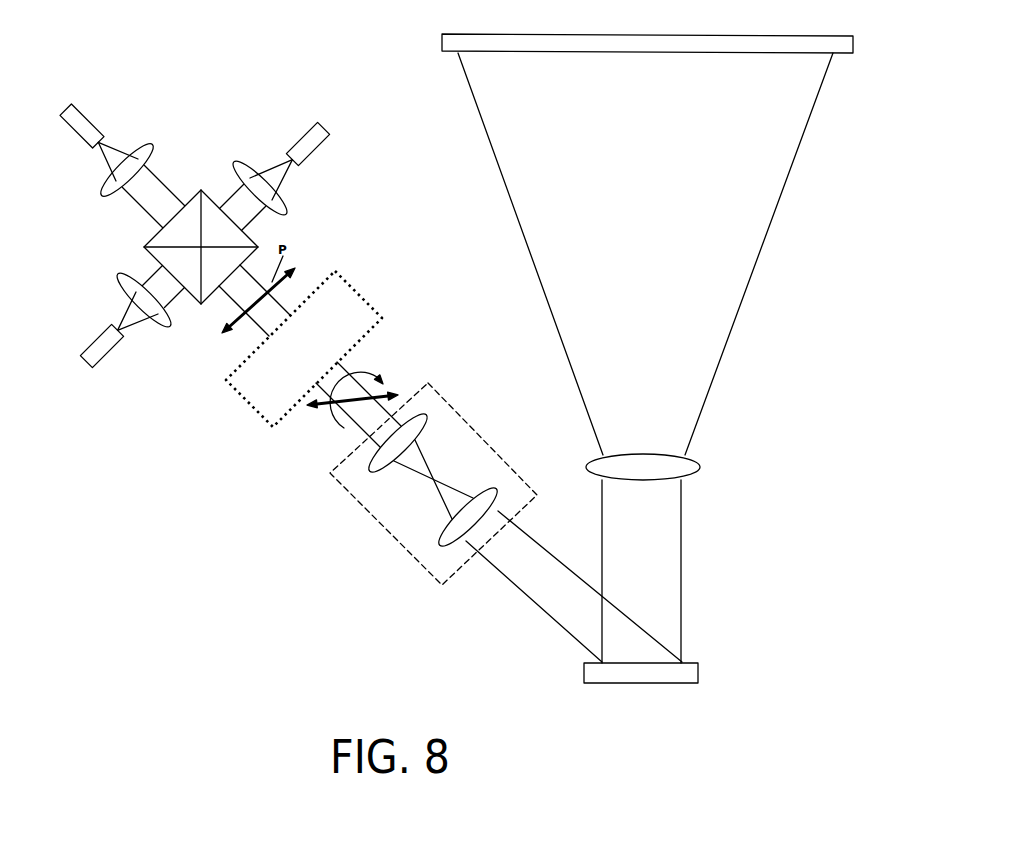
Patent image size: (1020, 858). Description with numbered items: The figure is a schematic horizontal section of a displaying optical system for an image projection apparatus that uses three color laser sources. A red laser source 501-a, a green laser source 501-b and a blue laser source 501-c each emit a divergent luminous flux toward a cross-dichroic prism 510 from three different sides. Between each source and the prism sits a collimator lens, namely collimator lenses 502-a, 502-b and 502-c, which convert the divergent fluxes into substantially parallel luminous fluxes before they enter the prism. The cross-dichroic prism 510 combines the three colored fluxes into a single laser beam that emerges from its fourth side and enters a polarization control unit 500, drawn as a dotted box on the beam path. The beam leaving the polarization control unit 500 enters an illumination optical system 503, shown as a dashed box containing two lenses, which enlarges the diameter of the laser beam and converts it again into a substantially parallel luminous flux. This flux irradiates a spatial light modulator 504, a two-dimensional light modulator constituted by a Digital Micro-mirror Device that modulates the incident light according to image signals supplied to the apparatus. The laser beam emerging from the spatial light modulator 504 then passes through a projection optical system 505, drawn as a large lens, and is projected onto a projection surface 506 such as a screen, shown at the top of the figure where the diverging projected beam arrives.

The red laser source 501-a is at (73, 104).
The green laser source 501-b is at (333, 118).
The blue laser source 501-c is at (90, 354).
The collimator lens 502-a is at (138, 160).
The collimator lens 502-b is at (273, 200).
The collimator lens 502-c is at (155, 311).
The cross-dichroic prism 510 is at (175, 236).
The polarization control unit 500 is at (348, 310).
The illumination optical system 503 is at (453, 430).
The spatial light modulator 504 is at (657, 683).
The projection optical system 505 is at (693, 463).
The projection surface 506 is at (842, 43).